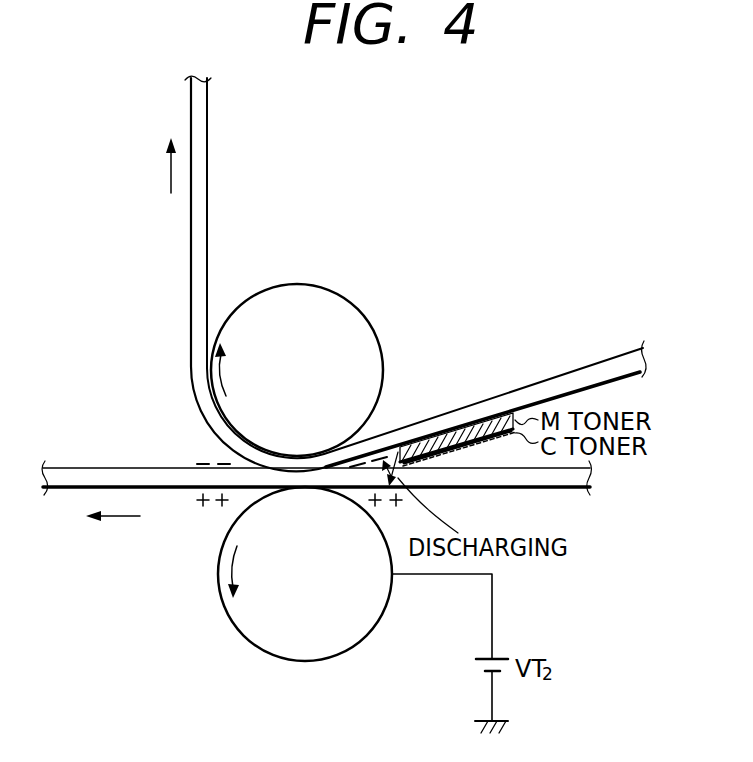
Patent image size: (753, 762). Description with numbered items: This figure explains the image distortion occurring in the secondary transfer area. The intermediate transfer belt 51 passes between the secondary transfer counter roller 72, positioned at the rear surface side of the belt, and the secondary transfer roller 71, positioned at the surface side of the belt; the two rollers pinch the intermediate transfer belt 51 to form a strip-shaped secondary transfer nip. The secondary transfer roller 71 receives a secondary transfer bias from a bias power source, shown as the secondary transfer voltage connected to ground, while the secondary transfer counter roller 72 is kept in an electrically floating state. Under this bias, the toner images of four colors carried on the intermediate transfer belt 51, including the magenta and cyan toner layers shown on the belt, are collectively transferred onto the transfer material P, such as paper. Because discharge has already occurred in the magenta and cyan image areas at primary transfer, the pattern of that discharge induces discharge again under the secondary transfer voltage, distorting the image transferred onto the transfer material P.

The intermediate transfer belt 51 is at (208, 205).
The secondary transfer counter roller 72 is at (344, 301).
The secondary transfer roller 71 is at (227, 622).
The transfer material P is at (512, 489).